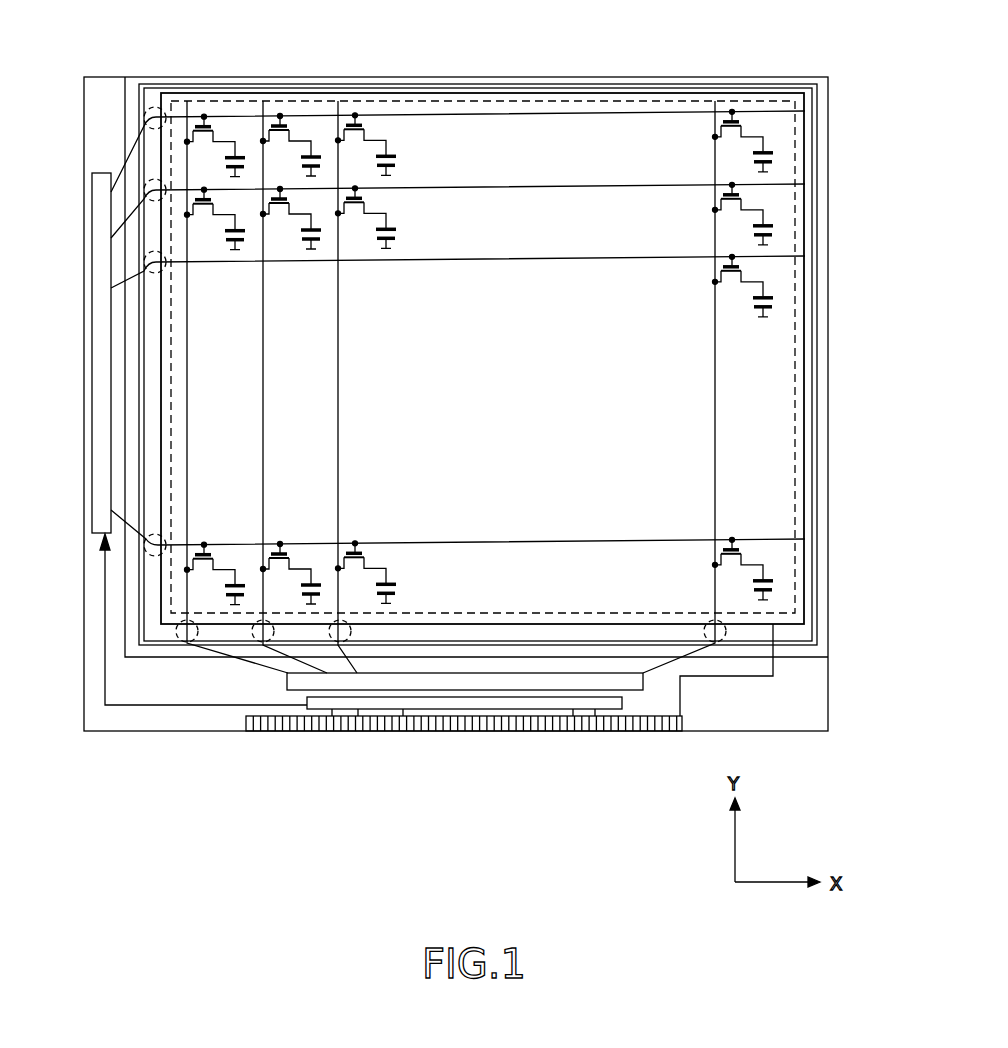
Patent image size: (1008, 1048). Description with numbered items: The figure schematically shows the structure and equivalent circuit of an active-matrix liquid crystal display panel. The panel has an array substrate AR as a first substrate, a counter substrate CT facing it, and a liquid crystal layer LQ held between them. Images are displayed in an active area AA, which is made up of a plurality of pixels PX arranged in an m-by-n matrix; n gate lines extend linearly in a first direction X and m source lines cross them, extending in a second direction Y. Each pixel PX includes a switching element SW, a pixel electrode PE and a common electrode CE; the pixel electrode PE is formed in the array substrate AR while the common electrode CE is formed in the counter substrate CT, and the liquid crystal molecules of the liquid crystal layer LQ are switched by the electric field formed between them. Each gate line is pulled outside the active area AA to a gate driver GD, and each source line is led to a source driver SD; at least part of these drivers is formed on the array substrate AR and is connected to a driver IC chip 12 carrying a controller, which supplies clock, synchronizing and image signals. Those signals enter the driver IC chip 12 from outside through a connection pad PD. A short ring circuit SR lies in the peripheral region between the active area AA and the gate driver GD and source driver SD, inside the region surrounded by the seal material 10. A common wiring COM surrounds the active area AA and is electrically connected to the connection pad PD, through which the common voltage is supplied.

The seal material 10 is at (828, 97).
The driver IC chip 12 is at (423, 709).
The short ring circuit SR is at (155, 108).
The pixel PX is at (264, 116).
The liquid crystal layer LQ is at (274, 119).
The pixel electrode PE is at (238, 154).
The common wiring COM is at (637, 84).
The switching element SW is at (204, 138).
The common electrode CE is at (281, 190).
The active area AA is at (796, 312).
The gate driver GD is at (93, 478).
The counter substrate CT is at (818, 644).
The array substrate AR is at (828, 680).
The source driver SD is at (287, 681).
The connection pad PD is at (678, 731).